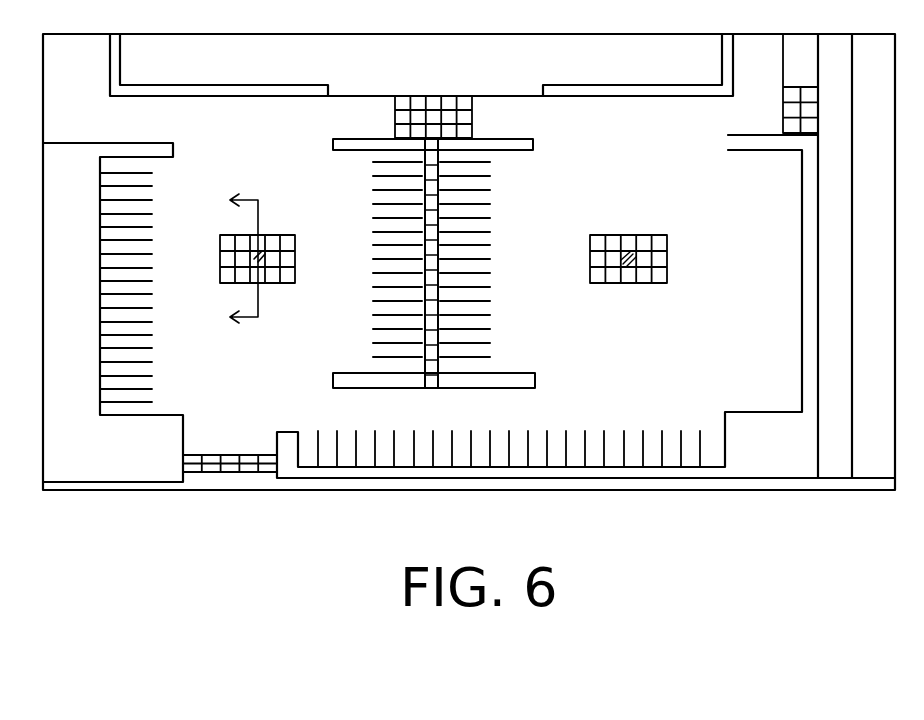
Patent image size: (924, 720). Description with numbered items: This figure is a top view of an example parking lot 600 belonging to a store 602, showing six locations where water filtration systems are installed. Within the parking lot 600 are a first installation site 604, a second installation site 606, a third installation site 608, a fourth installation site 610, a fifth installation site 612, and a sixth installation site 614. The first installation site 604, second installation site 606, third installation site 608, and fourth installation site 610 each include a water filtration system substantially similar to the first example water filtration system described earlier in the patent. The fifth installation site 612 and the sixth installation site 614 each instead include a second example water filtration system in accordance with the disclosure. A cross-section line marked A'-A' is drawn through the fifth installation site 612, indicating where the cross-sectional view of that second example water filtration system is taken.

The parking lot 600 is at (670, 354).
The store 602 is at (495, 62).
The first installation site 604 is at (476, 121).
The second installation site 606 is at (773, 110).
The third installation site 608 is at (433, 390).
The fourth installation site 610 is at (198, 453).
The fifth installation site 612 is at (298, 256).
The sixth installation site 614 is at (668, 252).